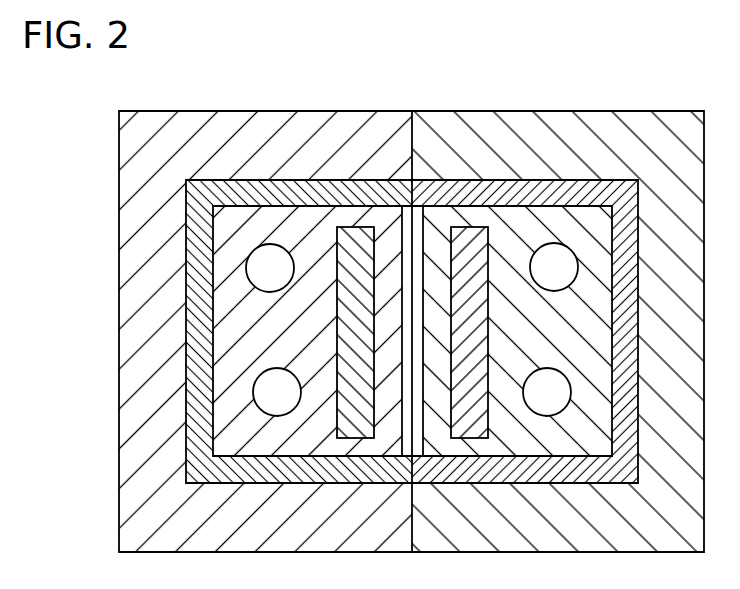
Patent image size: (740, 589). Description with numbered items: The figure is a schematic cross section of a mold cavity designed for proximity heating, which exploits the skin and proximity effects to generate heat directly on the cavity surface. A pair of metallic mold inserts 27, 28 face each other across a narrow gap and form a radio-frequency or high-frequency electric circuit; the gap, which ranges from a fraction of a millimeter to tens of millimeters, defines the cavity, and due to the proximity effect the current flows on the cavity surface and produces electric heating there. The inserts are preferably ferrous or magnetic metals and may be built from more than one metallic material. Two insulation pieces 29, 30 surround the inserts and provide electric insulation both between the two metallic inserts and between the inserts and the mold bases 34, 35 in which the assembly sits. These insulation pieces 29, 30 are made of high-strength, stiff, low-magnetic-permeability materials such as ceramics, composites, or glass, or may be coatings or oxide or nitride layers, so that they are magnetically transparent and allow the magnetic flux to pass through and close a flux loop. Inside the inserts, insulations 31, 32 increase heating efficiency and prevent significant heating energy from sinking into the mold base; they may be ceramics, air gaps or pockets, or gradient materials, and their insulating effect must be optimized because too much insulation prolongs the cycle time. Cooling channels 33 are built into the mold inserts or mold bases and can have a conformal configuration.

The metallic mold insert 27 is at (235, 230).
The metallic mold insert 28 is at (515, 233).
The insulation piece 29 is at (203, 186).
The insulation piece 30 is at (587, 188).
The insulation 31 is at (356, 265).
The insulation 32 is at (460, 253).
The cooling channel 33 is at (263, 267).
The mold base 34 is at (143, 197).
The mold base 35 is at (663, 195).